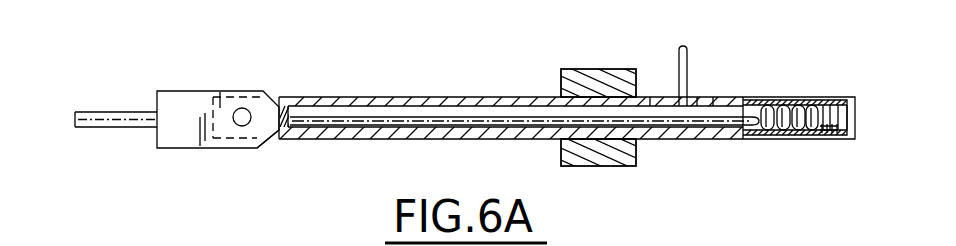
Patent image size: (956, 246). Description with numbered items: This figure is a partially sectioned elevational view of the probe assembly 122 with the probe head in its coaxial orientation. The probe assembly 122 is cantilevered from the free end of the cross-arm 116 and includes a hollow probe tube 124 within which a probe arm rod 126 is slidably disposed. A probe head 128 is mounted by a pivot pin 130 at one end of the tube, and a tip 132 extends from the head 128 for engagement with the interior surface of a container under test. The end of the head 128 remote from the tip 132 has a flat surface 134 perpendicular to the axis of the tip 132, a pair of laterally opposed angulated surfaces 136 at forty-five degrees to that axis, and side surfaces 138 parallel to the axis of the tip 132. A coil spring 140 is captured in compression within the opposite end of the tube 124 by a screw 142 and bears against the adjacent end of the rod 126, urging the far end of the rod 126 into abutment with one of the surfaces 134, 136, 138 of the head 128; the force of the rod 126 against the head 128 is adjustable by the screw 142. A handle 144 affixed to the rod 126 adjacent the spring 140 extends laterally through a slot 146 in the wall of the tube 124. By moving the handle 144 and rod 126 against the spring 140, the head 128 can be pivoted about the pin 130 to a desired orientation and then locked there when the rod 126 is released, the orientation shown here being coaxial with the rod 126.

The cross-arm 116 is at (592, 72).
The probe assembly 122 is at (774, 92).
The probe tube 124 is at (373, 98).
The probe arm rod 126 is at (435, 115).
The probe head 128 is at (170, 100).
The pivot pin 130 is at (240, 108).
The tip 132 is at (89, 117).
The flat surface 134 is at (283, 110).
The angulated surfaces 136 is at (263, 142).
The side surfaces 138 is at (248, 150).
The coil spring 140 is at (795, 100).
The screw 142 is at (832, 135).
The handle 144 is at (679, 58).
The slot 146 is at (697, 100).